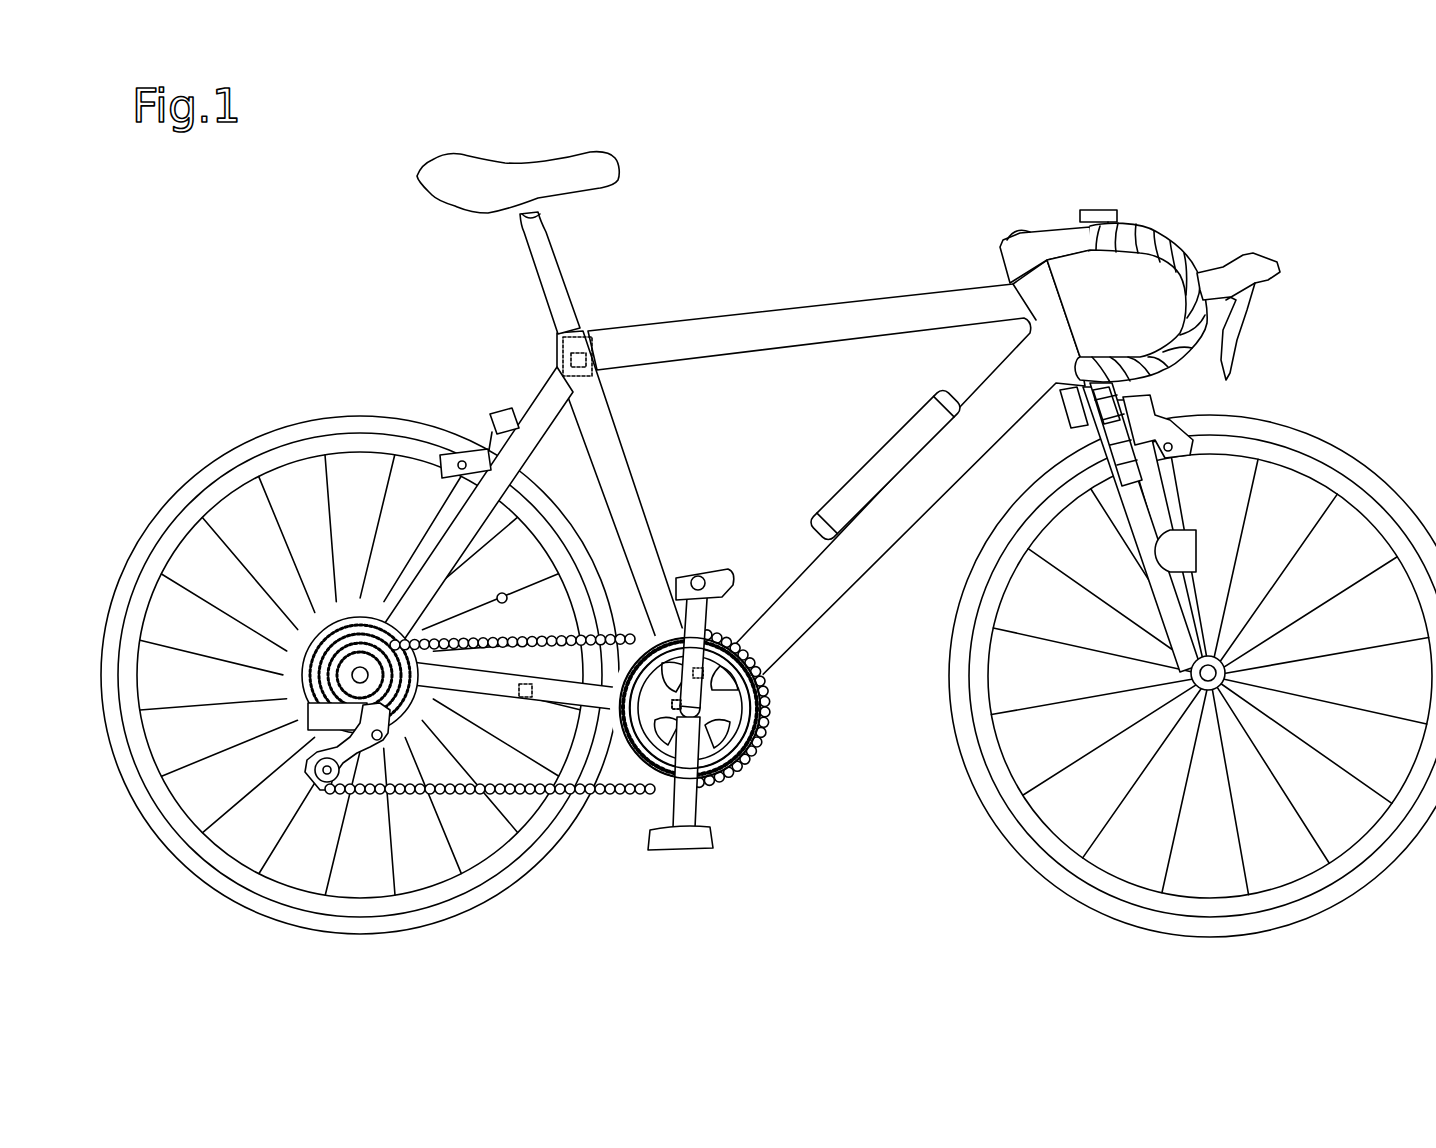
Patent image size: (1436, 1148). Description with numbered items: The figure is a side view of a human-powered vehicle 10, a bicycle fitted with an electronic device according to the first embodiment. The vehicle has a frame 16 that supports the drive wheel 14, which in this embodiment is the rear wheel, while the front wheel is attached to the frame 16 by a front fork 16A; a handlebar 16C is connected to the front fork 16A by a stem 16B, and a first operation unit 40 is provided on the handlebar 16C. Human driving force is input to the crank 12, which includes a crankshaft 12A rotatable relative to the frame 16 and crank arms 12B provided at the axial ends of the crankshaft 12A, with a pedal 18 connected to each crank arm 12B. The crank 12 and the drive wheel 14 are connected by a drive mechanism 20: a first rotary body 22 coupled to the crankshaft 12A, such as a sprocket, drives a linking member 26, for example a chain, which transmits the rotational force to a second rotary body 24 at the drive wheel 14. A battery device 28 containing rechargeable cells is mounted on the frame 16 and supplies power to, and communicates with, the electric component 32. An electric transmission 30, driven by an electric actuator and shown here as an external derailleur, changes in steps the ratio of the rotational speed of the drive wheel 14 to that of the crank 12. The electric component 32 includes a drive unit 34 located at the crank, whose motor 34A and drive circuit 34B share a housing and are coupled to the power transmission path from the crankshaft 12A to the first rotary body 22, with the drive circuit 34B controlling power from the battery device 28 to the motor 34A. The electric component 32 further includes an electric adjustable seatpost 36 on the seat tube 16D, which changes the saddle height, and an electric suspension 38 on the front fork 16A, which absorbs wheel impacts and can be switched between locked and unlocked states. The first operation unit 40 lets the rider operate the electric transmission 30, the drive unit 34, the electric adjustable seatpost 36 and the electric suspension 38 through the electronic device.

The human-powered vehicle 10 is at (1137, 122).
The crank 12 is at (789, 837).
The crankshaft 12A is at (764, 688).
The crank arms 12B is at (703, 612).
The drive wheel 14 is at (262, 440).
The frame 16 is at (789, 318).
The front fork 16A is at (1160, 605).
The stem 16B is at (1063, 233).
The handlebar 16C is at (1163, 235).
The seat tube 16D is at (614, 452).
The pedal 18 is at (722, 572).
The drive mechanism 20 is at (619, 860).
The first rotary body 22 is at (640, 755).
The second rotary body 24 is at (325, 635).
The linking member 26 is at (405, 795).
The battery device 28 is at (868, 468).
The electric transmission 30 is at (308, 722).
The electric component 32 is at (590, 336).
The drive unit 34 is at (781, 727).
The motor 34A is at (690, 708).
The drive circuit 34B is at (690, 708).
The electric adjustable seatpost 36 is at (618, 324).
The electric suspension 38 is at (1077, 426).
The first operation unit 40 is at (1247, 320).